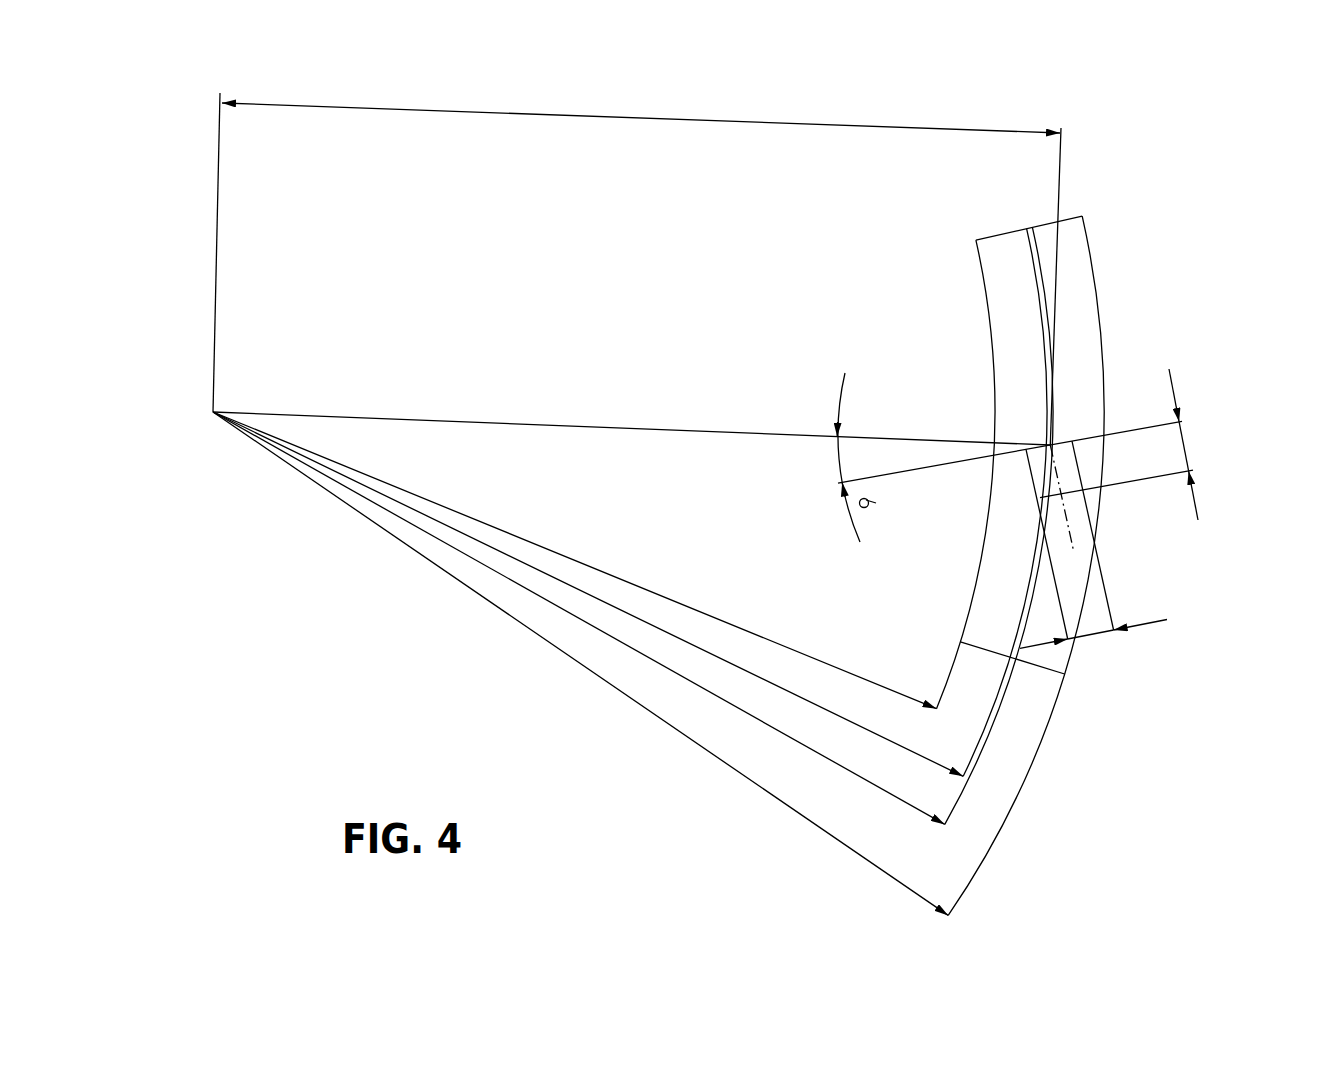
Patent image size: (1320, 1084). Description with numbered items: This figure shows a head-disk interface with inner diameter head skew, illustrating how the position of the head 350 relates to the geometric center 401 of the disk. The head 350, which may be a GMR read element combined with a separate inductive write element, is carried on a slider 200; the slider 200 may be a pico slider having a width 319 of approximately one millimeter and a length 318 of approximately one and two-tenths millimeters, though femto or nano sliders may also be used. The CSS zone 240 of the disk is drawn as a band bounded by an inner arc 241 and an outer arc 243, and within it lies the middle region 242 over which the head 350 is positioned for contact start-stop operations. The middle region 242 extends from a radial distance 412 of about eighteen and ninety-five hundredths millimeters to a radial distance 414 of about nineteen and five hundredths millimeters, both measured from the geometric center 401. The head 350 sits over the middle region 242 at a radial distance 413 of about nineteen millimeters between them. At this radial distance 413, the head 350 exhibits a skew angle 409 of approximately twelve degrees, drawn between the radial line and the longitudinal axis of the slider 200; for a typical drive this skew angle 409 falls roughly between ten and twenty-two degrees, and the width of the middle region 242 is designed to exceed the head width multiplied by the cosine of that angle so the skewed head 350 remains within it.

The geometric center 401 is at (213, 416).
The radial distance 413 is at (508, 113).
The head 350 is at (1050, 444).
The CSS zone 240 is at (1070, 544).
The CSS zone inner boundary 241 is at (989, 241).
The middle region 242 is at (1026, 230).
The CSS zone outer boundary 243 is at (1067, 222).
The radial distance 412 is at (553, 576).
The radial distance 414 is at (597, 620).
The skew angle 409 is at (1009, 457).
The slider 200 is at (1073, 466).
The length 318 is at (1197, 503).
The width 319 is at (1133, 630).